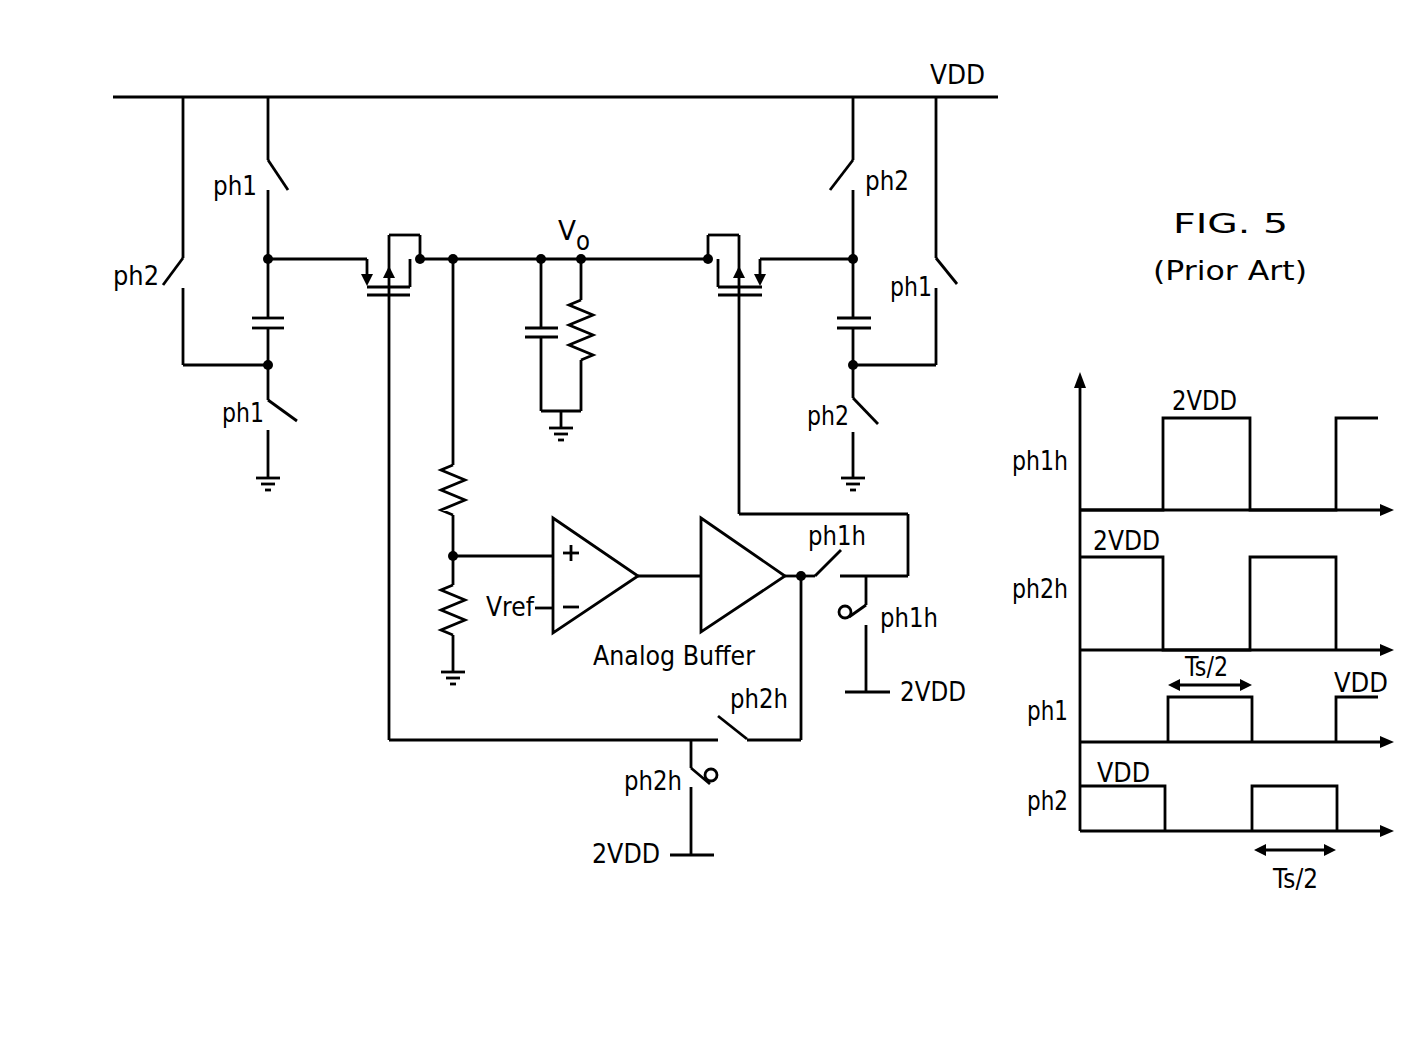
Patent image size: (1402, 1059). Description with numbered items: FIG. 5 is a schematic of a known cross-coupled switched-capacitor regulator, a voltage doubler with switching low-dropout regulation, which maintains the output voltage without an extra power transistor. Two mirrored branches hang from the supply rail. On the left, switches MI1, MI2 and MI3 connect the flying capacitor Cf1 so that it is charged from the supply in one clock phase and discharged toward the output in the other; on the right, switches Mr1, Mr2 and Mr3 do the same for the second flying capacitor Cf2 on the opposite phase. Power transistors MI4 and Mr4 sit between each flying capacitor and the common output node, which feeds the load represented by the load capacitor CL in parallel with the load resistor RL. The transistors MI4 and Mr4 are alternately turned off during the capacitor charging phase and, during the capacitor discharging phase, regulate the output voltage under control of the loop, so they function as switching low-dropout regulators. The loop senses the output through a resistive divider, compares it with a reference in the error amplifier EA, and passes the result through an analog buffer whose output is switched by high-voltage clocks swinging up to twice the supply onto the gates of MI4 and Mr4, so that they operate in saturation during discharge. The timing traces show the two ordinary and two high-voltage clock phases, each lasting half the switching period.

The switch transistor MI1 (ph1) MI1 is at (300, 178).
The switch transistor MI2 (ph2) MI2 is at (215, 231).
The switch transistor MI3 (ph1) MI3 is at (302, 427).
The power transistor MI4 is at (344, 259).
The flying capacitor Cf1 is at (288, 312).
The load capacitor CL is at (527, 335).
The load resistor RL is at (586, 349).
The error amplifier EA is at (595, 575).
The switch transistor Mr1 (ph2) Mr1 is at (825, 178).
The switch transistor Mr2 (ph1) Mr2 is at (929, 231).
The switch transistor Mr3 (ph2) Mr3 is at (881, 427).
The power transistor Mr4 is at (780, 256).
The flying capacitor Cf2 is at (832, 312).